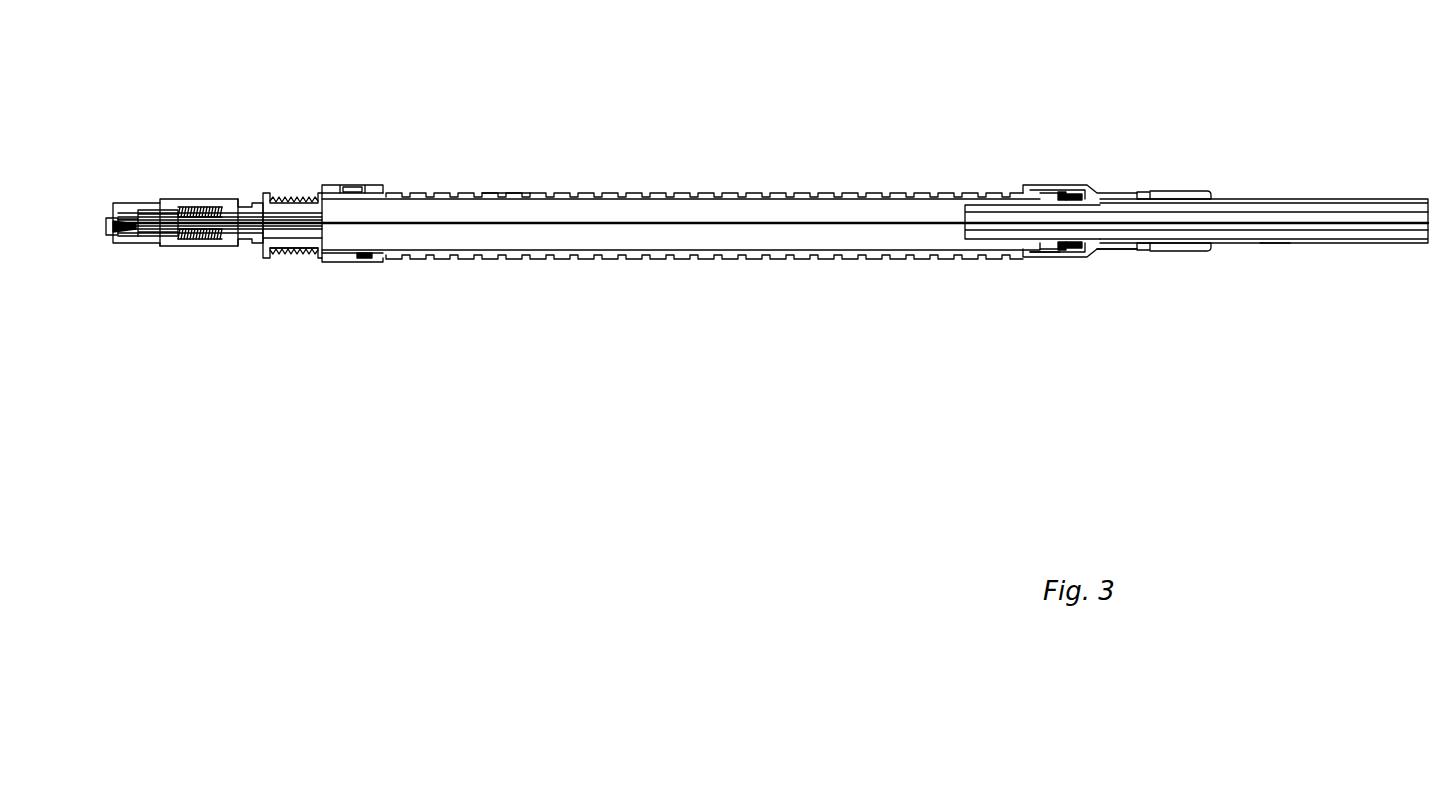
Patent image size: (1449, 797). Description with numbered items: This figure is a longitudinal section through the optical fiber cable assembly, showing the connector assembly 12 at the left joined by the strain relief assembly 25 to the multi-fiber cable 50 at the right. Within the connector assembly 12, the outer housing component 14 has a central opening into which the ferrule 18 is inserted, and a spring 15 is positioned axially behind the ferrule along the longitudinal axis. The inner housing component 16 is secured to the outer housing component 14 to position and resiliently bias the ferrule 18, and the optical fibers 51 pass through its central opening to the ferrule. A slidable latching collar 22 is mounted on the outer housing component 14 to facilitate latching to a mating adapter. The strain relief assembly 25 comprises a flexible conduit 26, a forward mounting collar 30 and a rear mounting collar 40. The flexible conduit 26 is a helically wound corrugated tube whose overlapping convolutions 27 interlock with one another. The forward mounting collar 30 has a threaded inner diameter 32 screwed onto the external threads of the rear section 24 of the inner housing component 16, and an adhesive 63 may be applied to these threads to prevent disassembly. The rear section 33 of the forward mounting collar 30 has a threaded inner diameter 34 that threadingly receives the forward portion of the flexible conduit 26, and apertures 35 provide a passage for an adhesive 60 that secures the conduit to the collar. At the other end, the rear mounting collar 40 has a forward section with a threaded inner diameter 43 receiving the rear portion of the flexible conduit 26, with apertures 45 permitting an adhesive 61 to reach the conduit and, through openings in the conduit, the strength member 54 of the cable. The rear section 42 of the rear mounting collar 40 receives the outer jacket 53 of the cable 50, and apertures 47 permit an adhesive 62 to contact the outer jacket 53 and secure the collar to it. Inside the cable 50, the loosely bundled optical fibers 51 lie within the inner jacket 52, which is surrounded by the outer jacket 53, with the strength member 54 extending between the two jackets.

The connector assembly 12 is at (184, 165).
The outer housing component 14 is at (133, 205).
The spring 15 is at (208, 214).
The inner housing component 16 is at (263, 193).
The ferrule 18 is at (110, 236).
The slidable latching collar 22 is at (184, 247).
The rear section of inner housing component 24 is at (302, 200).
The strain relief assembly 25 is at (611, 138).
The flexible conduit 26 is at (626, 193).
The convolutions 27 is at (530, 192).
The forward mounting collar 30 is at (370, 190).
The threaded inner diameter 32 is at (292, 256).
The rear section of forward mounting collar 33 is at (338, 263).
The threaded inner diameter 34 is at (376, 189).
The apertures 35 is at (362, 262).
The rear mounting collar 40 is at (1098, 190).
The rear section of rear mounting collar 42 is at (1190, 192).
The threaded inner diameter 43 is at (1055, 192).
The apertures 45 is at (1071, 190).
The apertures 47 is at (1146, 194).
The multi-fiber cable 50 is at (1294, 198).
The optical fibers 51 is at (248, 232).
The inner jacket 52 is at (966, 256).
The outer jacket 53 is at (1275, 248).
The strength member 54 is at (1040, 258).
The adhesive 60 is at (368, 260).
The adhesive 61 is at (1061, 192).
The adhesive 62 is at (1128, 258).
The adhesive 63 is at (335, 192).